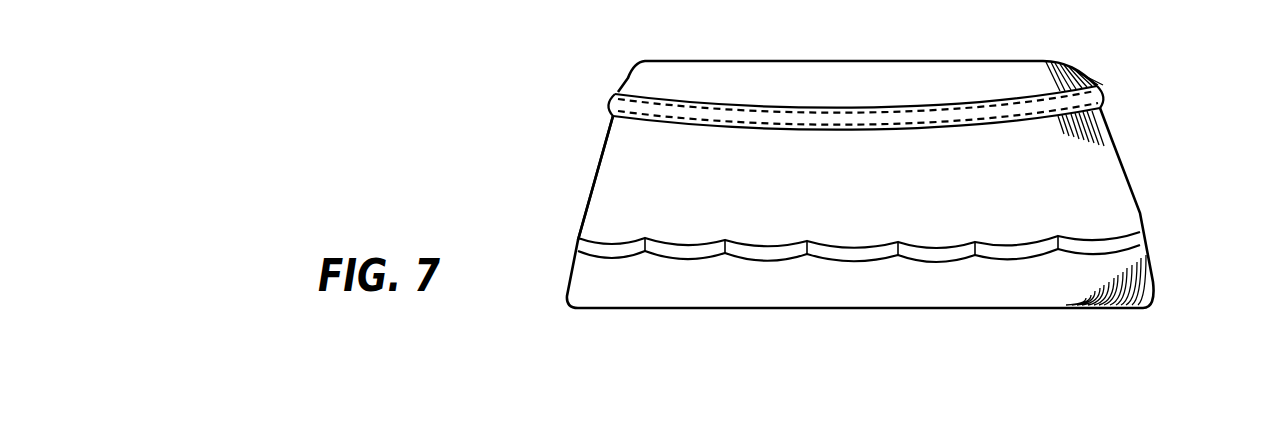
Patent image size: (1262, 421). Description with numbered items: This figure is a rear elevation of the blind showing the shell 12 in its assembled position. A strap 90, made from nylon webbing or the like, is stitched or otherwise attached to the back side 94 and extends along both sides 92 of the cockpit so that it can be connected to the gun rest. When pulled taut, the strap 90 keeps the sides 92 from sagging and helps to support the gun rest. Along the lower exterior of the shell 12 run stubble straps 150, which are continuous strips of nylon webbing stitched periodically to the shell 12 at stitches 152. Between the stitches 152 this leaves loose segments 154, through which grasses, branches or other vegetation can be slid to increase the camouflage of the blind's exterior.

The shell 12 is at (1080, 72).
The strap 90 is at (852, 120).
The sides 92 is at (589, 192).
The back side 94 is at (1073, 165).
The stubble straps 150 is at (942, 264).
The stitches 152 is at (812, 250).
The segments 154 is at (760, 254).